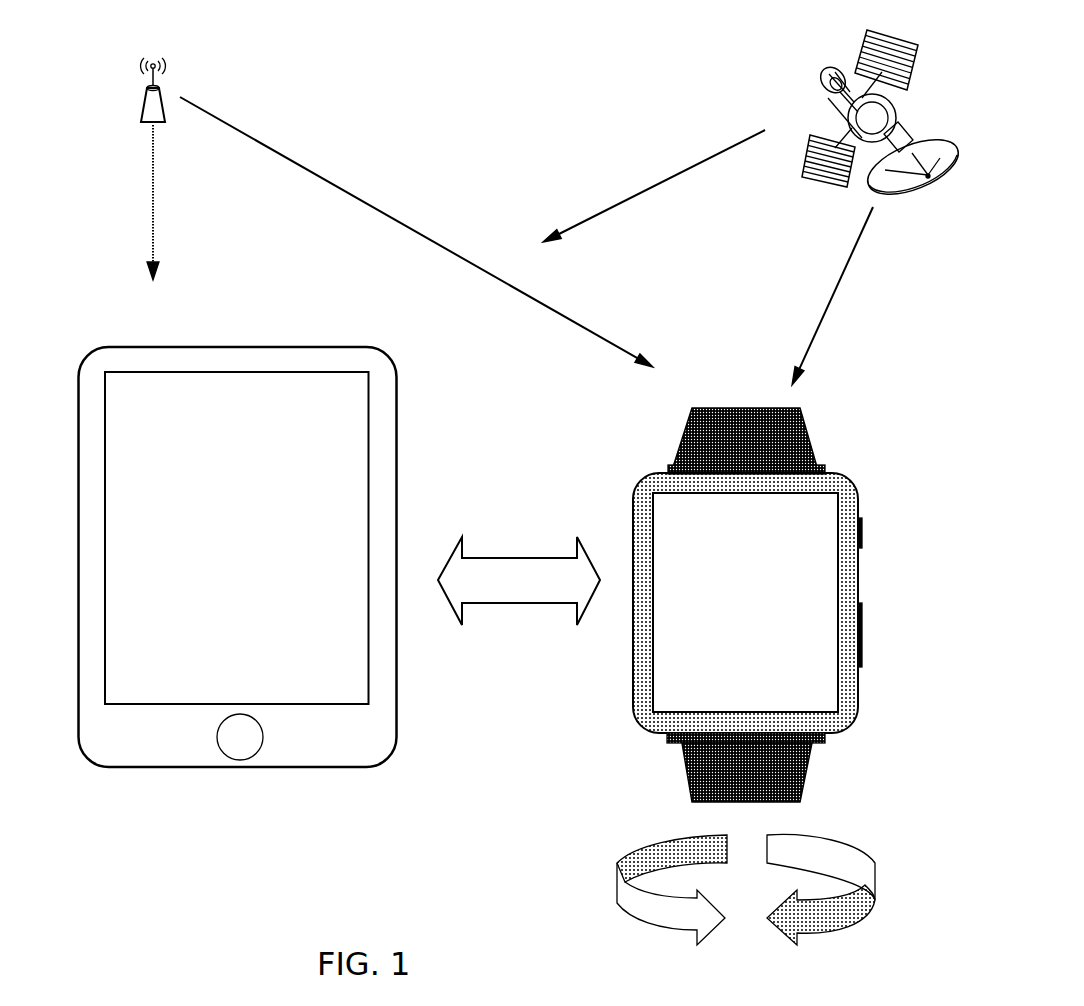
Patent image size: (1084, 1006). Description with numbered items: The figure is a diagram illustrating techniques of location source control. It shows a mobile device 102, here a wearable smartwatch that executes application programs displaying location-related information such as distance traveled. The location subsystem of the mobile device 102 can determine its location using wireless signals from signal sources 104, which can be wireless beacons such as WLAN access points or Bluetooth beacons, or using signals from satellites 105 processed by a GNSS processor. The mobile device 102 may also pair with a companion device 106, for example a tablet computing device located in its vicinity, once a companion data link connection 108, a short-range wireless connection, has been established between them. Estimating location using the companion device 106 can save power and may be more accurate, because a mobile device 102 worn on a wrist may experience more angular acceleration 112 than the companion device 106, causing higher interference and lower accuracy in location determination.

The mobile device 102 is at (730, 408).
The signal sources 104 is at (140, 100).
The satellites 105 is at (818, 75).
The companion device 106 is at (132, 347).
The companion data link connection 108 is at (530, 558).
The angular acceleration 112 is at (617, 863).